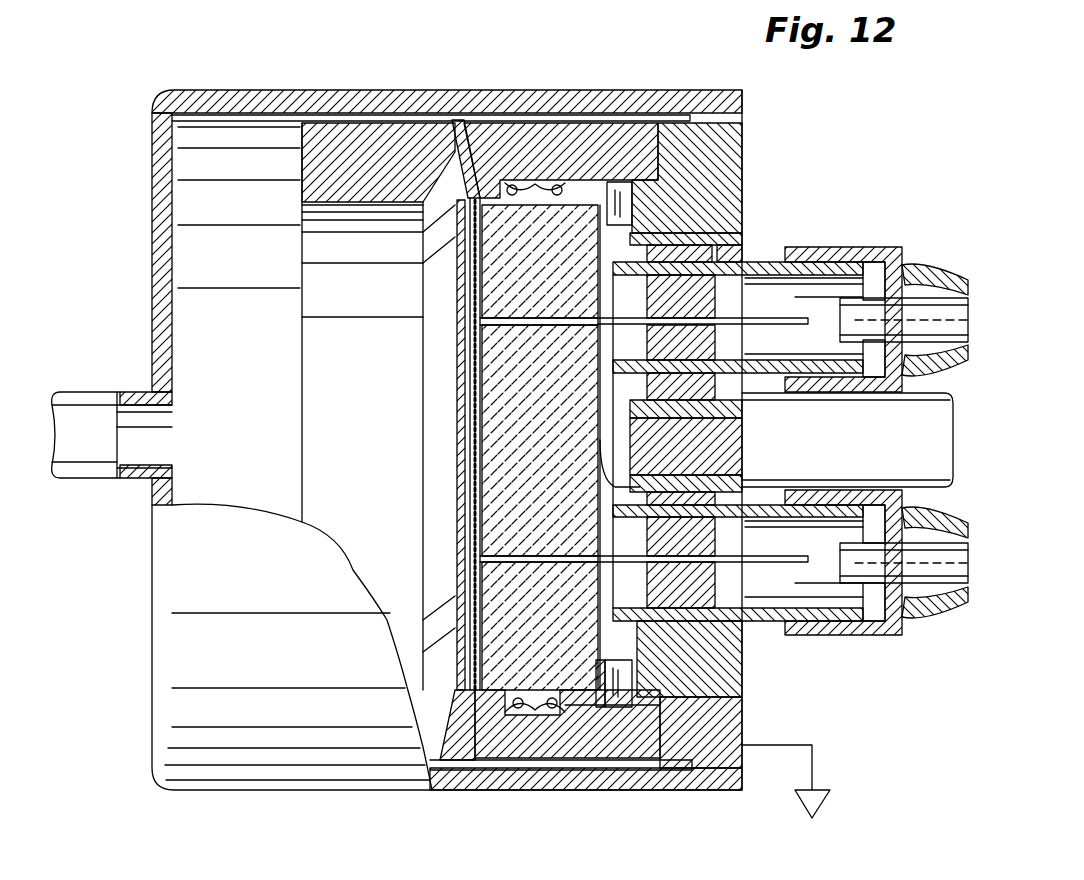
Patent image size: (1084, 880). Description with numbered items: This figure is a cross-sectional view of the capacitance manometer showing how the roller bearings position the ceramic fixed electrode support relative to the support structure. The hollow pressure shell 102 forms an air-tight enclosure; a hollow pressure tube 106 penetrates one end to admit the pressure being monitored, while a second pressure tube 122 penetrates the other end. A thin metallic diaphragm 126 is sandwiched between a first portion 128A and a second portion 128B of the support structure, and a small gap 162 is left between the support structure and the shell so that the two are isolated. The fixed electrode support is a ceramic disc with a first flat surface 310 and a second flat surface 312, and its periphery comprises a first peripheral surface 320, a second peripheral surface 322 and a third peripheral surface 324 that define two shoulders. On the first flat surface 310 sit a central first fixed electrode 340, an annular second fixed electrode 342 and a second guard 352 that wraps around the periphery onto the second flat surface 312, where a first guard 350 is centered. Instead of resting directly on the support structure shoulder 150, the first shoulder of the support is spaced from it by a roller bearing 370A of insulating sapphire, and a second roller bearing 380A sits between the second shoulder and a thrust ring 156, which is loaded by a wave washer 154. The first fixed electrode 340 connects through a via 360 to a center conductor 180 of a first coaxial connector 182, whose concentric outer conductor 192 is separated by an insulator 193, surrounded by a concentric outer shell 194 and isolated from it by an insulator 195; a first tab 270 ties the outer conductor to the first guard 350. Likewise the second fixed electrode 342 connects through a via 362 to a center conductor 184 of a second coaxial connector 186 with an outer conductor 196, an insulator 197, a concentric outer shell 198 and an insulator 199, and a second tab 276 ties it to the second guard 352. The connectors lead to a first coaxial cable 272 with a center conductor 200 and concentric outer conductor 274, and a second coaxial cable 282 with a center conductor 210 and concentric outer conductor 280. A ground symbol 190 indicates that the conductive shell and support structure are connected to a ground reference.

The hollow pressure shell 102 is at (228, 745).
The hollow pressure tube 106 is at (86, 408).
The second pressure tube 122 is at (912, 449).
The diaphragm 126 is at (456, 367).
The first portion of support structure 128A is at (340, 123).
The second portion of support structure 128B is at (570, 123).
The support structure shoulder 150 is at (519, 182).
The wave washer 154 is at (618, 660).
The thrust ring 156 is at (580, 712).
The gap 162 is at (463, 117).
The center conductor 180 is at (768, 558).
The first coaxial connector 182 is at (810, 617).
The center conductor 184 is at (738, 328).
The second coaxial connector 186 is at (752, 385).
The ground symbol 190 is at (833, 798).
The concentric outer conductor 192 is at (763, 625).
The insulator 193 is at (710, 590).
The concentric outer shell 194 is at (789, 437).
The insulator 195 is at (716, 527).
The concentric outer conductor 196 is at (768, 262).
The insulator 197 is at (718, 297).
The concentric outer shell 198 is at (752, 235).
The insulator 199 is at (748, 215).
The center conductor 200 is at (832, 560).
The center conductor 210 is at (822, 317).
The first tab 270 is at (605, 485).
The first coaxial cable 272 is at (903, 612).
The concentric outer conductor 274 is at (903, 636).
The second tab 276 is at (596, 283).
The concentric outer conductor 280 is at (905, 250).
The second coaxial cable 282 is at (905, 270).
The first flat surface 310 is at (468, 577).
The second flat surface 312 is at (597, 420).
The first peripheral surface 320 is at (463, 175).
The second peripheral surface 322 is at (575, 180).
The third peripheral surface 324 is at (607, 200).
The first fixed electrode 340 is at (458, 432).
The second fixed electrode 342 is at (455, 282).
The first guard 350 is at (597, 412).
The second guard 352 is at (597, 620).
The first via 360 is at (560, 555).
The second via 362 is at (597, 352).
The roller bearing 370A is at (518, 207).
The roller bearing 380A is at (623, 191).